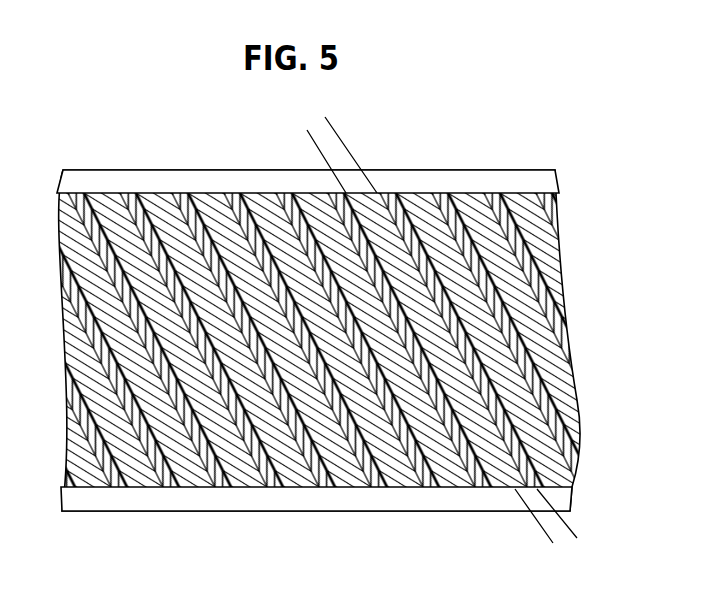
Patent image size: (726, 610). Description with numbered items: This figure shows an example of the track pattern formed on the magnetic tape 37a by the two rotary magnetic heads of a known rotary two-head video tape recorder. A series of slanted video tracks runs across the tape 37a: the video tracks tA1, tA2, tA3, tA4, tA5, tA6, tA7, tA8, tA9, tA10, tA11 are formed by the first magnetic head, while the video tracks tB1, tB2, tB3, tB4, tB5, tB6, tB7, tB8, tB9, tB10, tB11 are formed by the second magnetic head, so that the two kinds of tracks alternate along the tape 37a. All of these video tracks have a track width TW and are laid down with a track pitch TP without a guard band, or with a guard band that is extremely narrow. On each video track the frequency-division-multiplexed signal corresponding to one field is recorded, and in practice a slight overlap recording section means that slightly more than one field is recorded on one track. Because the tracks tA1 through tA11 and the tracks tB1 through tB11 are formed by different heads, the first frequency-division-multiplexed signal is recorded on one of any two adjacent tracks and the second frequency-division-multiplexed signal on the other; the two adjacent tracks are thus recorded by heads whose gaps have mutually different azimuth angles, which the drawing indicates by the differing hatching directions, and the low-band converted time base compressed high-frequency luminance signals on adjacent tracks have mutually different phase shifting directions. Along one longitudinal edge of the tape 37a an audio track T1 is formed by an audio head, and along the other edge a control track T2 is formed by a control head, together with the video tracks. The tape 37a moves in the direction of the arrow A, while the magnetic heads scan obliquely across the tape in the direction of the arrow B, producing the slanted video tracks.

The tape 37a is at (166, 170).
The audio track T1 is at (440, 170).
The control track T2 is at (82, 503).
The track width TW is at (295, 153).
The track pitch TP is at (535, 552).
The tape moving direction A is at (152, 573).
The head scanning direction B is at (585, 452).
The video track tA1 is at (103, 488).
The video track tA2 is at (148, 488).
The video track tA3 is at (215, 488).
The video track tA4 is at (272, 488).
The video track tA5 is at (318, 488).
The video track tA6 is at (368, 488).
The video track tA7 is at (418, 488).
The video track tA8 is at (467, 488).
The video track tA9 is at (517, 488).
The video track tA10 is at (542, 408).
The video track tA11 is at (523, 332).
The video track tB1 is at (127, 488).
The video track tB2 is at (180, 488).
The video track tB3 is at (240, 488).
The video track tB4 is at (295, 488).
The video track tB5 is at (343, 488).
The video track tB6 is at (393, 488).
The video track tB7 is at (442, 488).
The video track tB8 is at (487, 488).
The video track tB9 is at (523, 383).
The video track tB10 is at (525, 350).
The video track tB11 is at (533, 303).